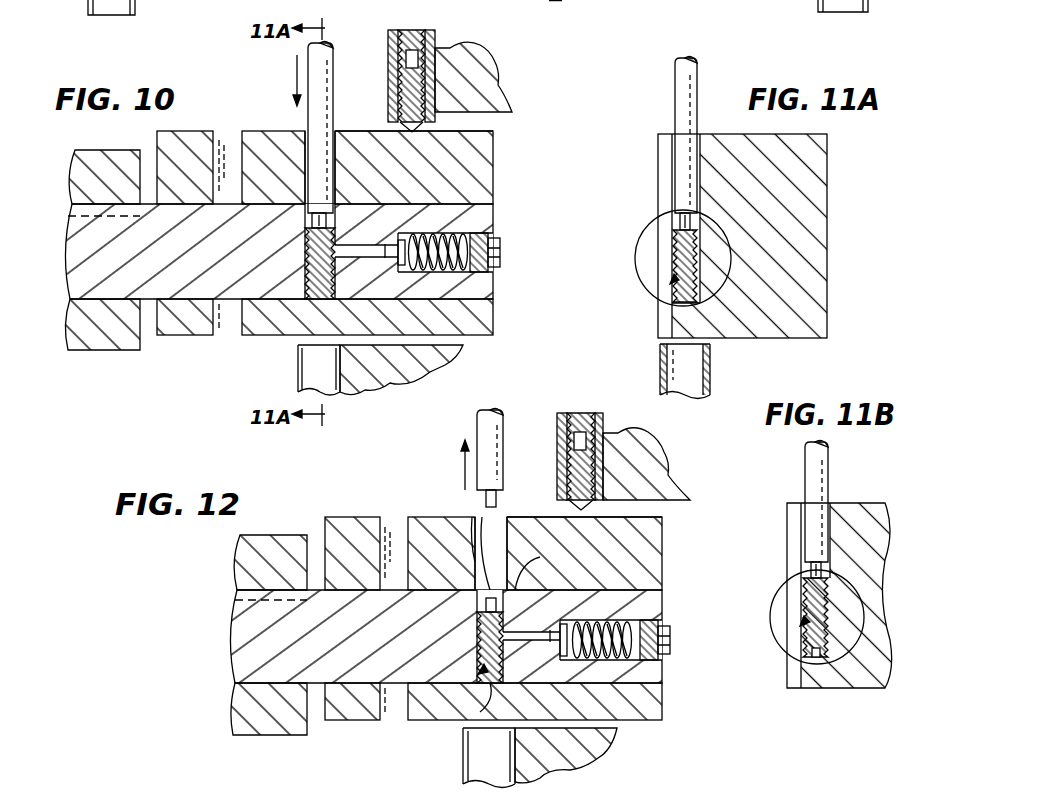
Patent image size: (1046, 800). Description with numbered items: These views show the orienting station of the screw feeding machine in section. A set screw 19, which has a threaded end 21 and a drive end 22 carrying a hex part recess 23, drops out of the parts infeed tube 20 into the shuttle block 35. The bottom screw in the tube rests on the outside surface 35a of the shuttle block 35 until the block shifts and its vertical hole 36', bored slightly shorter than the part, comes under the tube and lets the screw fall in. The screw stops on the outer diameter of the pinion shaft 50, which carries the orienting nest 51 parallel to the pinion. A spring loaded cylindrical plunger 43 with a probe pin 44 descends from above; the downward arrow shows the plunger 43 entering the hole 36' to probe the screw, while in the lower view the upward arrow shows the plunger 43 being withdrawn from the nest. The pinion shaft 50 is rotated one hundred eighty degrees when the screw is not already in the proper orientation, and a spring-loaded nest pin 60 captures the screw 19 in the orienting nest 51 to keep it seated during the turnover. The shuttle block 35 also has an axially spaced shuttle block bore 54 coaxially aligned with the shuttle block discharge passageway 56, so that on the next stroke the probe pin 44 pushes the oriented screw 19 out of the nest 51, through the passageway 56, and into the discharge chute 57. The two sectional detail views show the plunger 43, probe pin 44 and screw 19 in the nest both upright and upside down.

In FIG. 10, the set screw 19 is at (430, 82).
In FIG. 11A, the set screw 19 is at (656, 296).
In FIG. 11B, the set screw 19 is at (805, 624).
In FIG. 12, the set screw 19 is at (605, 468).
In FIG. 10, the parts infeed tube 20 is at (415, 50).
In FIG. 12, the parts infeed tube 20 is at (590, 434).
In FIG. 12, the threaded end 21 is at (482, 712).
In FIG. 12, the drive end 22 is at (525, 582).
In FIG. 12, the part recess 23 is at (440, 527).
In FIG. 10, the shuttle block 35 is at (488, 165).
In FIG. 12, the shuttle block 35 is at (655, 548).
In FIG. 10, the outside surface of shuttle block 35a is at (470, 131).
In FIG. 12, the outside surface of shuttle block 35a is at (640, 517).
In FIG. 10, the vertical hole 36' is at (345, 145).
In FIG. 12, the vertical hole 36' is at (514, 541).
In FIG. 10, the plunger 43 is at (333, 80).
In FIG. 11A, the plunger 43 is at (676, 84).
In FIG. 11B, the plunger 43 is at (830, 478).
In FIG. 12, the plunger 43 is at (503, 422).
In FIG. 10, the probe pin 44 is at (326, 222).
In FIG. 11A, the probe pin 44 is at (682, 225).
In FIG. 11B, the probe pin 44 is at (812, 572).
In FIG. 12, the probe pin 44 is at (498, 498).
In FIG. 10, the pinion shaft 50 is at (488, 285).
In FIG. 12, the pinion shaft 50 is at (248, 620).
In FIG. 12, the orienting nest 51 is at (480, 527).
In FIG. 10, the shuttle block bore 54 is at (230, 138).
In FIG. 12, the shuttle block bore 54 is at (397, 527).
In FIG. 10, the shuttle block discharge passageway 56 is at (232, 326).
In FIG. 12, the shuttle block discharge passageway 56 is at (398, 720).
In FIG. 11A, the discharge chute 57 is at (700, 372).
In FIG. 10, the spring-loaded nest pin 60 is at (488, 312).
In FIG. 12, the spring-loaded nest pin 60 is at (600, 700).